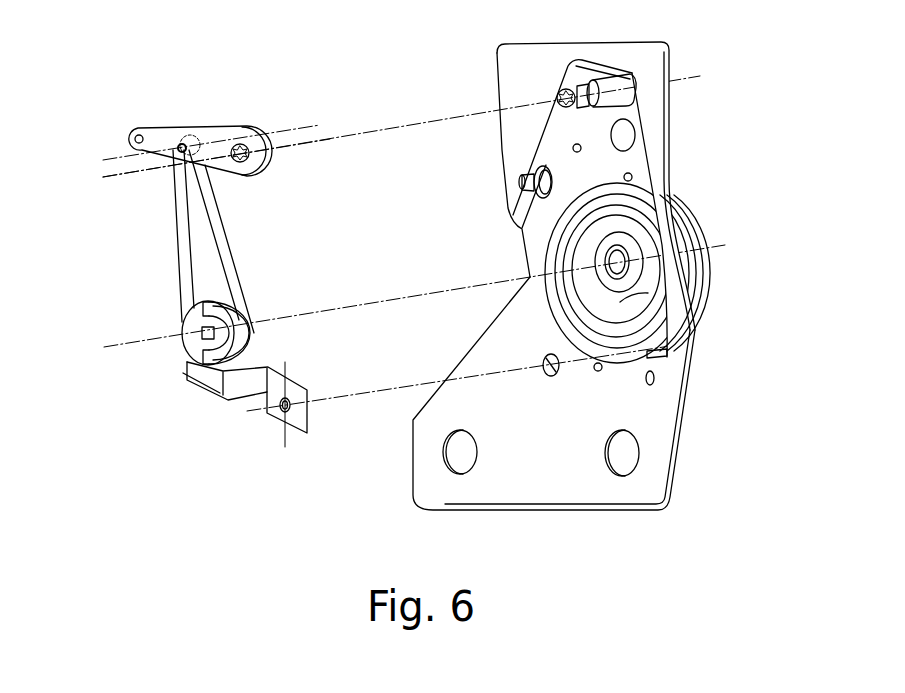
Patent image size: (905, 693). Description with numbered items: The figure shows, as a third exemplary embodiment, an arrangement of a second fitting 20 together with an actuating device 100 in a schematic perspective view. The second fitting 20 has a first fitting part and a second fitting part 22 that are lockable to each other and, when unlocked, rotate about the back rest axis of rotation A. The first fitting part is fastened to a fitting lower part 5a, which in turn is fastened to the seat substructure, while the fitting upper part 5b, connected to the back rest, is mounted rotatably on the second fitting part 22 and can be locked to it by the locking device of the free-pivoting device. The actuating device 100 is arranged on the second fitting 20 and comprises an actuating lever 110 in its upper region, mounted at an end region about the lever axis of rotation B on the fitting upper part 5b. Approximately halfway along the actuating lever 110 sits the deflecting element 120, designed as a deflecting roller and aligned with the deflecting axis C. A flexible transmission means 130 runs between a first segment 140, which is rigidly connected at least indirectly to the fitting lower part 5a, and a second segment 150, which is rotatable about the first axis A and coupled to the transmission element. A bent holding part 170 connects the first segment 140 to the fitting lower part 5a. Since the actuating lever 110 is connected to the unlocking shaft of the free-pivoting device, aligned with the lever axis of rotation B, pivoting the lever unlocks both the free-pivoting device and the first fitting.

The actuating device 100 is at (404, 76).
The actuating lever 110 is at (151, 130).
The deflecting element 120 is at (198, 138).
The flexible transmission means 130 is at (178, 240).
The first segment 140 is at (195, 340).
The second segment 150 is at (226, 308).
The bent holding part 170 is at (238, 415).
The fitting lower part 5a is at (542, 484).
The fitting upper part 5b is at (648, 69).
The second fitting 20 is at (697, 231).
The second fitting part 22 is at (657, 294).
The back rest axis of rotation A is at (117, 342).
The lever axis of rotation B is at (118, 176).
The deflecting axis C is at (282, 129).